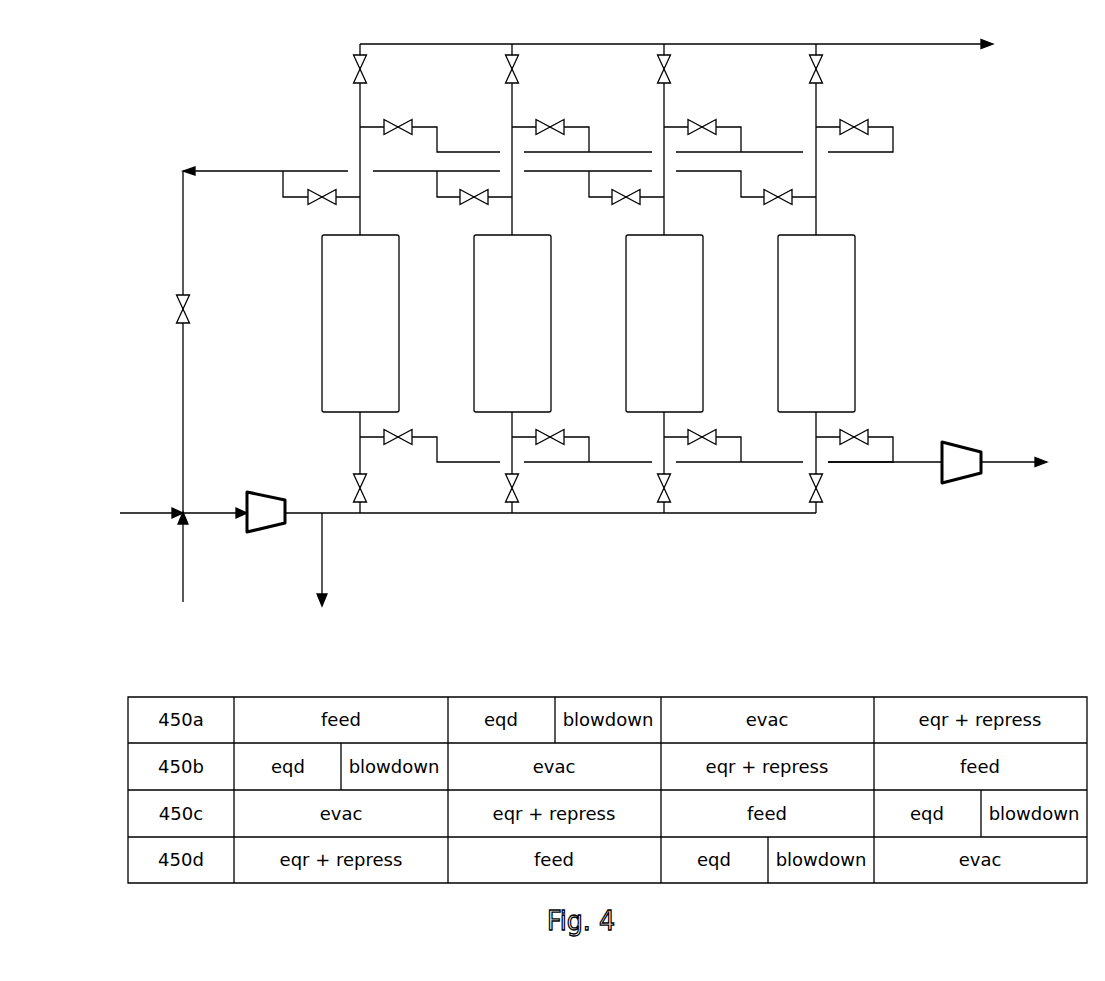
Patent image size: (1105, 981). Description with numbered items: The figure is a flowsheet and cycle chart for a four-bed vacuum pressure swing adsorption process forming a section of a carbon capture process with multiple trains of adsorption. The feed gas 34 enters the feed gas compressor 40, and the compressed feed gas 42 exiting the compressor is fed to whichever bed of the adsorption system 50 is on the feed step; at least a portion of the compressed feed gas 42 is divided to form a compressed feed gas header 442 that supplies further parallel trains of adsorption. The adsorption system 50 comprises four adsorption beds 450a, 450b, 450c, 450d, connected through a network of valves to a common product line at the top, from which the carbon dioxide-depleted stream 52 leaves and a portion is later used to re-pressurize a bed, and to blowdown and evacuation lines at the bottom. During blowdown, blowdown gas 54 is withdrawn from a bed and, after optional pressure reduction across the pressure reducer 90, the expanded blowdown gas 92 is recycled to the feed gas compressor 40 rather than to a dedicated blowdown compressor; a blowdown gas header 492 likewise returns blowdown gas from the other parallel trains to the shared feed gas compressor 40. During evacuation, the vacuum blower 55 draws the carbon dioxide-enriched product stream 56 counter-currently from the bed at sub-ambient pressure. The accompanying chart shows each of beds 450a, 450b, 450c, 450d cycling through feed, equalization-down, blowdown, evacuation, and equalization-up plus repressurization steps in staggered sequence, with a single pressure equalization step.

The feed gas 34 is at (140, 512).
The feed gas compressor 40 is at (279, 494).
The compressed feed gas 42 is at (342, 511).
The adsorption system 50 is at (588, 329).
The carbon dioxide-depleted stream 52 is at (966, 44).
The blowdown gas 54 is at (183, 215).
The vacuum blower 55 is at (968, 442).
The carbon dioxide-enriched product stream 56 is at (1024, 459).
The pressure reducer 90 is at (181, 309).
The expanded blowdown gas 92 is at (183, 405).
The compressed feed gas header 442 is at (329, 568).
The blowdown gas header 492 is at (189, 568).
The adsorption bed 450a is at (360, 323).
The adsorption bed 450b is at (512, 323).
The adsorption bed 450c is at (664, 323).
The adsorption bed 450d is at (816, 323).